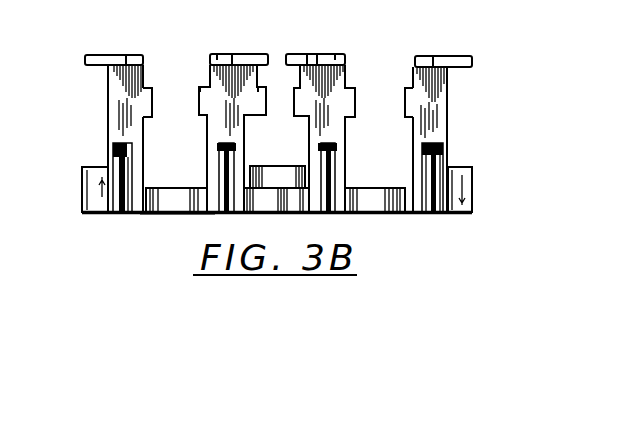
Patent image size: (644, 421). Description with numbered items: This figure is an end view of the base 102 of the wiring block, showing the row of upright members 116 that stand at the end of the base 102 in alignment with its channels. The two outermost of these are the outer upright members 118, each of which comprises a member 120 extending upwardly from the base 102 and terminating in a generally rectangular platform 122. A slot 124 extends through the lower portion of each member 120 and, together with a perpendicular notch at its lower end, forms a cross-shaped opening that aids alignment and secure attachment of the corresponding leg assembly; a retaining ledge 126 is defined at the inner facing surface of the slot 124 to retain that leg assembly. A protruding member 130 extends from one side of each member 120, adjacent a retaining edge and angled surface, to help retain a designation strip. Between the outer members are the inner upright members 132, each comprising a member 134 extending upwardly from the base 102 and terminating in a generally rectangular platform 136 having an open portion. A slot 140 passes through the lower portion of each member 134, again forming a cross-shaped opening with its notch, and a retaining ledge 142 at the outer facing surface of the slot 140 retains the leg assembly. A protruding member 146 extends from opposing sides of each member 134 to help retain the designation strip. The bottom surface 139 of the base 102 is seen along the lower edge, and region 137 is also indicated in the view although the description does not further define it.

The base 102 is at (455, 34).
The upright member 116 is at (126, 55).
The outer upright member 118 is at (110, 88).
The member 120 is at (117, 108).
The generally rectangular platform 122 is at (85, 60).
The slot 124 is at (113, 147).
The retaining ledge 126 is at (117, 156).
The protruding member 130 is at (150, 90).
The inner upright member 132 is at (232, 54).
The member 134 is at (207, 130).
The generally rectangular platform 136 is at (217, 54).
The base segment 137 is at (157, 213).
The bottom surface 139 is at (82, 197).
The slot 140 is at (213, 214).
The retaining ledge 142 is at (235, 147).
The protruding member 146 is at (200, 87).